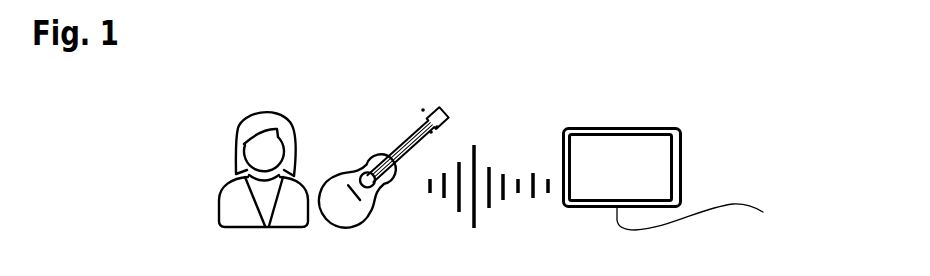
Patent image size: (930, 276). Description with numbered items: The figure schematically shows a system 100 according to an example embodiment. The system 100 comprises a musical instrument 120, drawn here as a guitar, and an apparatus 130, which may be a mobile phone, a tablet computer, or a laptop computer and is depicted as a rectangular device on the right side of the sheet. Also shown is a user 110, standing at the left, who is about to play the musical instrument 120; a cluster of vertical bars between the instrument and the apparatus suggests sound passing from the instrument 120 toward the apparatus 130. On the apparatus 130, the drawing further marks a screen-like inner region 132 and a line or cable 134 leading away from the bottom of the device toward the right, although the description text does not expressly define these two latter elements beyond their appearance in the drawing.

The system 100 is at (117, 160).
The user 110 is at (259, 110).
The musical instrument 120 is at (414, 112).
The apparatus 130 is at (568, 128).
The display screen 132 is at (628, 143).
The cable 134 is at (714, 212).